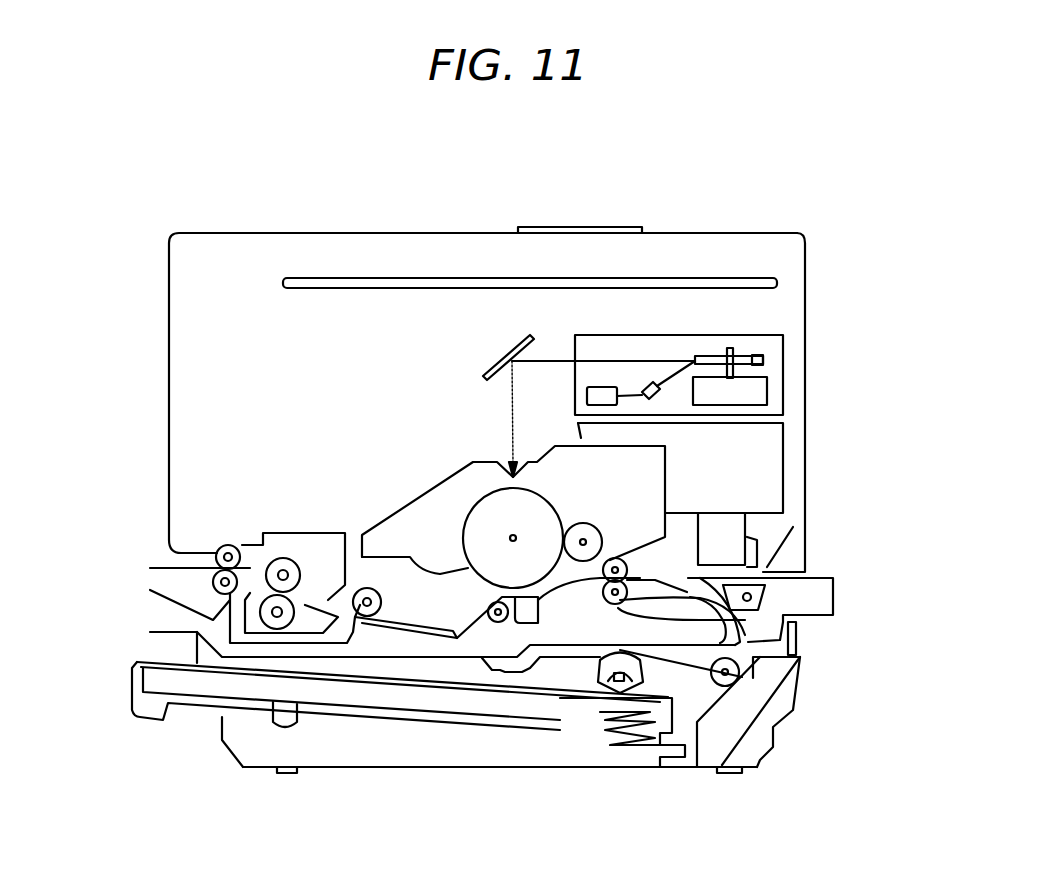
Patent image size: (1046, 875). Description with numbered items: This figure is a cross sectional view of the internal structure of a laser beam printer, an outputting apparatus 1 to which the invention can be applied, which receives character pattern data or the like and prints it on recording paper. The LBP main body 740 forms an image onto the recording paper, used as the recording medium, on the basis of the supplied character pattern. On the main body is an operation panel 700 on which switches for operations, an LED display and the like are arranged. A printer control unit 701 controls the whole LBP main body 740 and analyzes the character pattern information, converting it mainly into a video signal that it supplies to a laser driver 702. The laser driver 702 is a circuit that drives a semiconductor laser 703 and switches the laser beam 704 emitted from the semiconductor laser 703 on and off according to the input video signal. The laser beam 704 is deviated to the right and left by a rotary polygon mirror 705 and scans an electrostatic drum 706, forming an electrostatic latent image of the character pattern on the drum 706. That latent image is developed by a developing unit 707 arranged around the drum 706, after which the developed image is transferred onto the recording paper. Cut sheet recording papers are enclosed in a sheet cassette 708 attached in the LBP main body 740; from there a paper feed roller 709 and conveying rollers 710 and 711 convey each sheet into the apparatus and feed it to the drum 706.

The image forming apparatus 1 is at (318, 233).
The operation panel 700 is at (605, 226).
The LBP main body 740 is at (729, 232).
The printer control unit 701 is at (777, 280).
The laser driver 702 is at (587, 396).
The semiconductor laser 703 is at (657, 400).
The laser beam 704 is at (680, 360).
The rotary polygon mirror 705 is at (763, 358).
The electrostatic drum 706 is at (477, 502).
The developing unit 707 is at (392, 532).
The sheet cassette 708 is at (132, 682).
The paper feed roller 709 is at (598, 673).
The conveying roller 710 is at (725, 672).
The conveying roller 711 is at (750, 630).